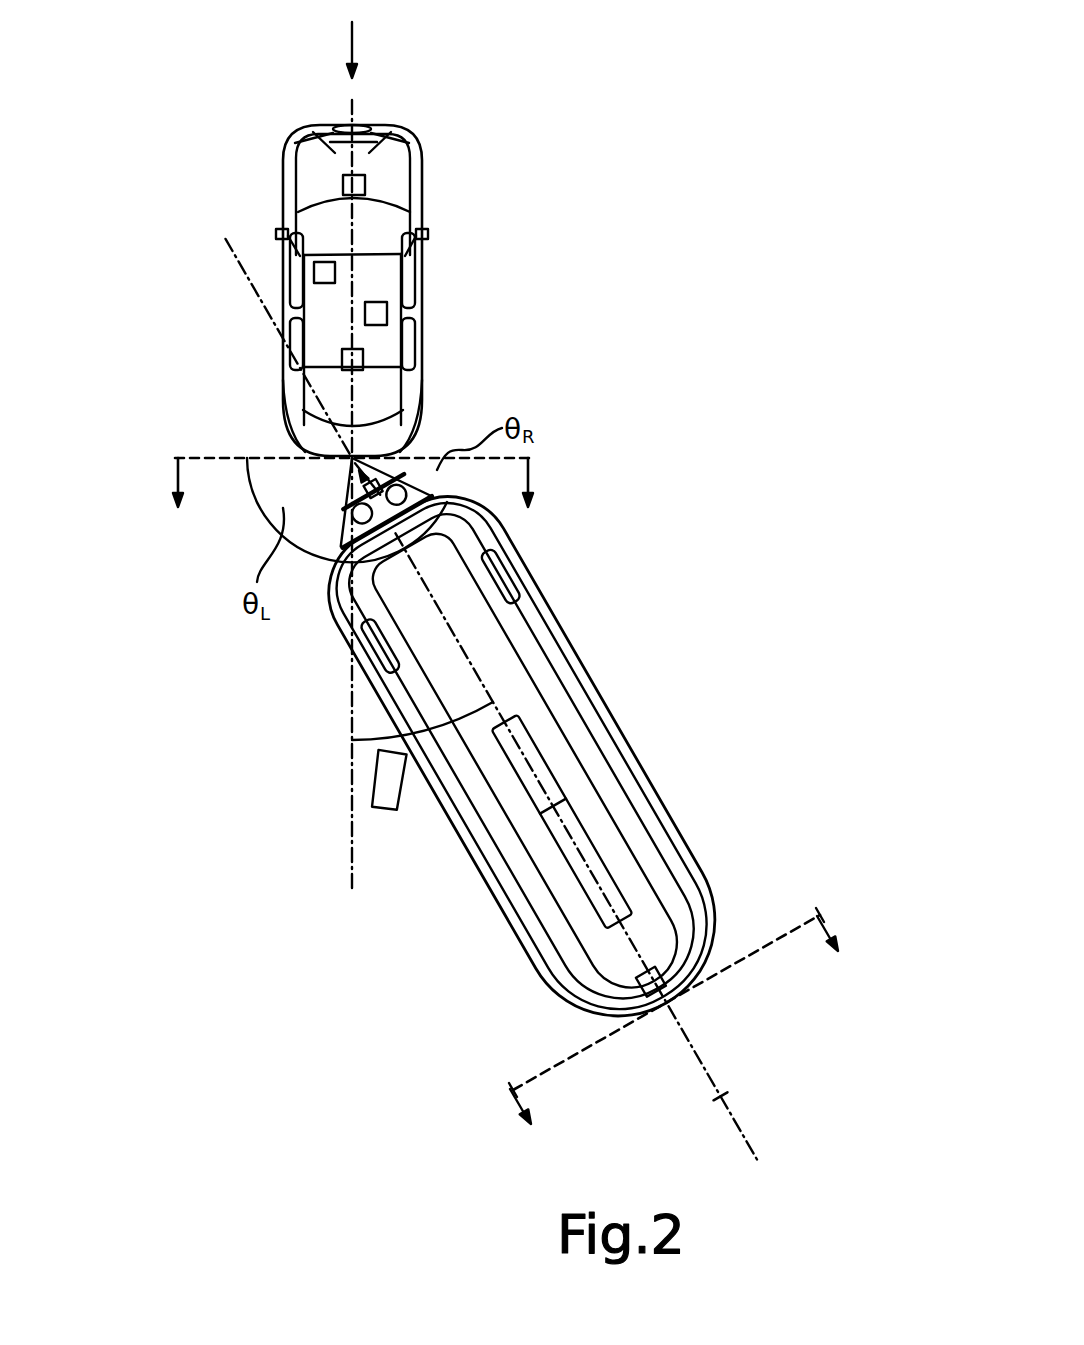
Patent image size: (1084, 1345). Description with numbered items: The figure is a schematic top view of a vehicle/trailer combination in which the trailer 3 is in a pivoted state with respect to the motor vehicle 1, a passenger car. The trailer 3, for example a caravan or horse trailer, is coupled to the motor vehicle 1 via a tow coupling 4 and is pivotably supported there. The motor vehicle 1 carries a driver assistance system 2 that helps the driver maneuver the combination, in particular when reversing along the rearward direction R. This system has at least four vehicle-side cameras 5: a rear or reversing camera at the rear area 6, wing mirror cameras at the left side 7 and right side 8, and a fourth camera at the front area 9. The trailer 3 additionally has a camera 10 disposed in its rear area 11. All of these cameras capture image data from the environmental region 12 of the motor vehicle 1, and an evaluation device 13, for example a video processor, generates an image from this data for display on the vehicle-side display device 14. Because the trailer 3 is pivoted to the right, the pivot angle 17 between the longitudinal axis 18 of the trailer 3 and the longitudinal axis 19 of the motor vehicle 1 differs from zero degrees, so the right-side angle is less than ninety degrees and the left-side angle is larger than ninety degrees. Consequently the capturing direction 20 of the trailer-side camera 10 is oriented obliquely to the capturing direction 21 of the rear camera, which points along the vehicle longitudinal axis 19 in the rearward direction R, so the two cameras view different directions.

The motor vehicle 1 is at (333, 153).
The driver assistance system 2 is at (374, 263).
The trailer 3 is at (588, 667).
The tow coupling 4 is at (360, 455).
The vehicle-side camera 5 is at (343, 183).
The rear area of the motor vehicle 6 is at (299, 468).
The left side of the motor vehicle 7 is at (260, 284).
The right side of the motor vehicle 8 is at (450, 282).
The front area of the motor vehicle 9 is at (322, 109).
The trailer-side camera 10 is at (663, 982).
The rear area of the trailer 11 is at (655, 1035).
The environmental region 12 is at (82, 426).
The evaluation device 13 is at (387, 316).
The display device 14 is at (322, 270).
The pivot angle 17 is at (365, 745).
The longitudinal axis of the trailer 18 is at (722, 1097).
The longitudinal axis of the motor vehicle 19 is at (388, 130).
The capturing direction of the trailer-side camera 20 is at (823, 925).
The capturing direction of the vehicle-side rear camera 21 is at (530, 477).
The rearward direction R is at (353, 47).